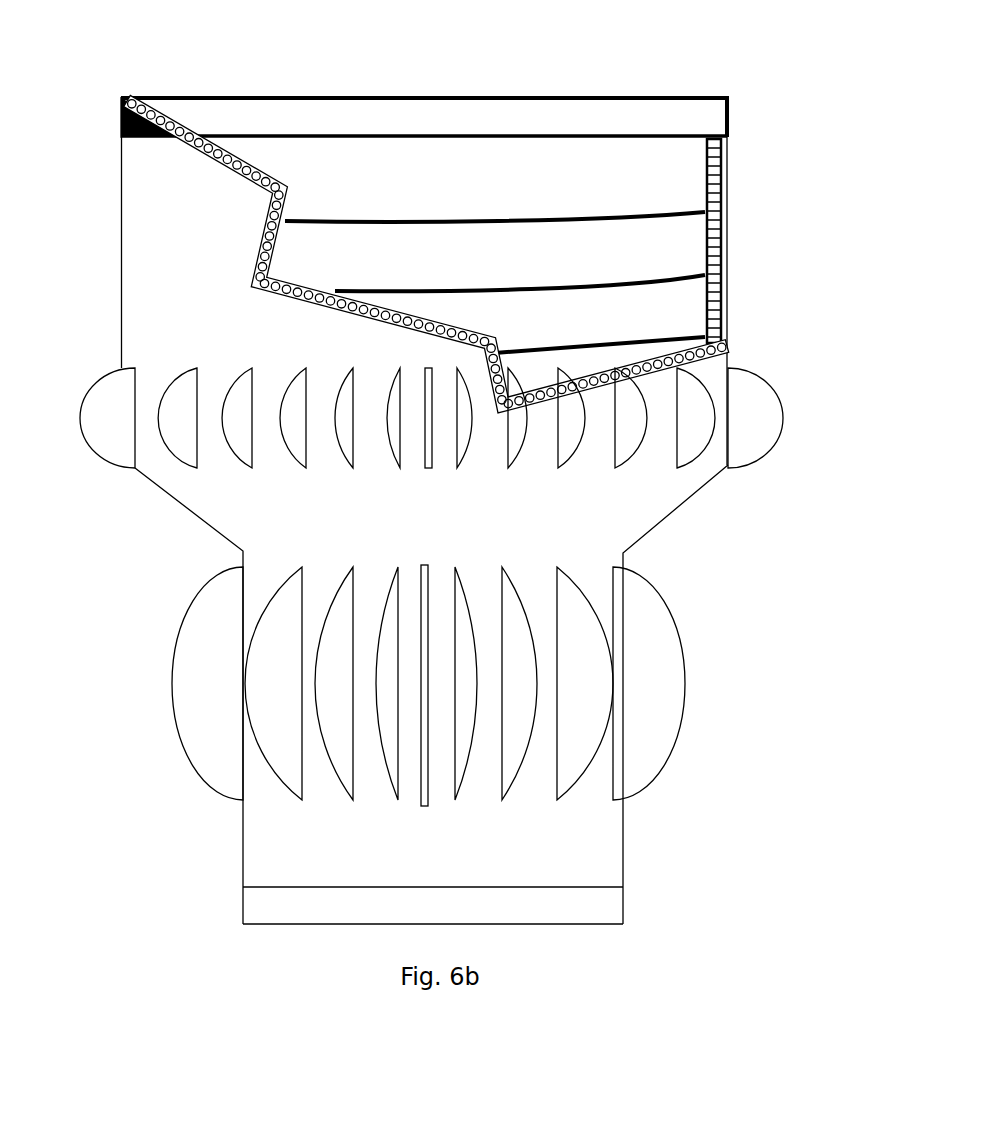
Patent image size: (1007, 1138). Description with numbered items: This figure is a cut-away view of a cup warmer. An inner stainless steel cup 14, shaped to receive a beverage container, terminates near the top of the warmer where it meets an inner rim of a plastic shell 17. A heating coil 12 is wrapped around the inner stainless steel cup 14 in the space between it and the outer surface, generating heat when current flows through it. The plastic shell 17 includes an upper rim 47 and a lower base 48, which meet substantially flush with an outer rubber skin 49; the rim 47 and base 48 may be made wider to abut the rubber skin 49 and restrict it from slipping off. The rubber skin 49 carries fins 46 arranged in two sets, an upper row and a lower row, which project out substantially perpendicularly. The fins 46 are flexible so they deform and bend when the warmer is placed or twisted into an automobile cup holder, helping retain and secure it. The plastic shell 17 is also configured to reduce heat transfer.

The heating coil 12 is at (325, 247).
The inner stainless steel cup 14 is at (342, 179).
The plastic shell 17 is at (722, 193).
The fins 46 is at (752, 412).
The upper rim 47 is at (692, 114).
The lower base 48 is at (255, 906).
The outer rubber skin 49 is at (632, 508).